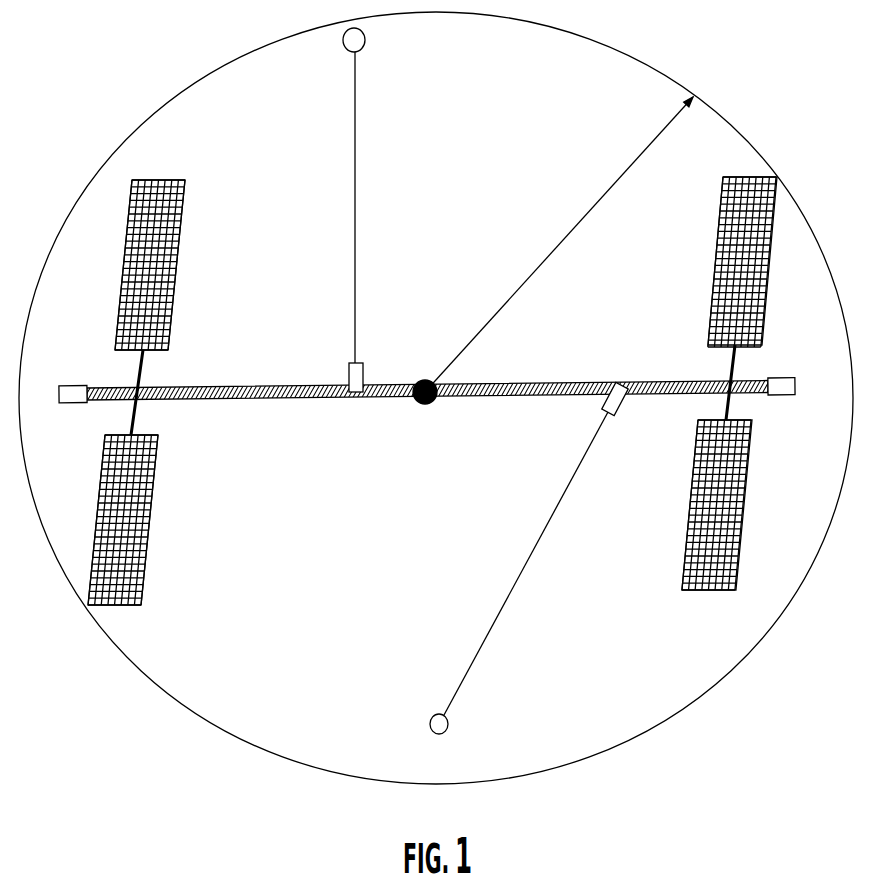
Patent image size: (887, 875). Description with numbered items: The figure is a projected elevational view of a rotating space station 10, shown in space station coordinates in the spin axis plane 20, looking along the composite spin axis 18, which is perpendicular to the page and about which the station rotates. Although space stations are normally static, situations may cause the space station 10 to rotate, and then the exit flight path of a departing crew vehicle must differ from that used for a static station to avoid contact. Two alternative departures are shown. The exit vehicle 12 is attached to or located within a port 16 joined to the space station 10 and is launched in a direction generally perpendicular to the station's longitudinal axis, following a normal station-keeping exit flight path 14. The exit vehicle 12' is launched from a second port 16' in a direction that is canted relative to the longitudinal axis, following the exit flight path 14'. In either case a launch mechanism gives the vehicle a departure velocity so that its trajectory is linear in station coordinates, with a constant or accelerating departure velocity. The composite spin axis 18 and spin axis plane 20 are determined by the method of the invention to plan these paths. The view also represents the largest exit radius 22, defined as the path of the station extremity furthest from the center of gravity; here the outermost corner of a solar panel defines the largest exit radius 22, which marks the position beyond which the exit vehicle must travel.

The space station 10 is at (239, 387).
The exit vehicle 12 is at (325, 59).
The exit vehicle 12' is at (479, 724).
The exit flight path 14 is at (318, 208).
The exit flight path 14' is at (531, 563).
The port 16 is at (332, 347).
The port 16' is at (627, 426).
The composite spin axis 18 is at (424, 381).
The spin axis plane 20 is at (290, 619).
The largest exit radius 22 is at (723, 112).